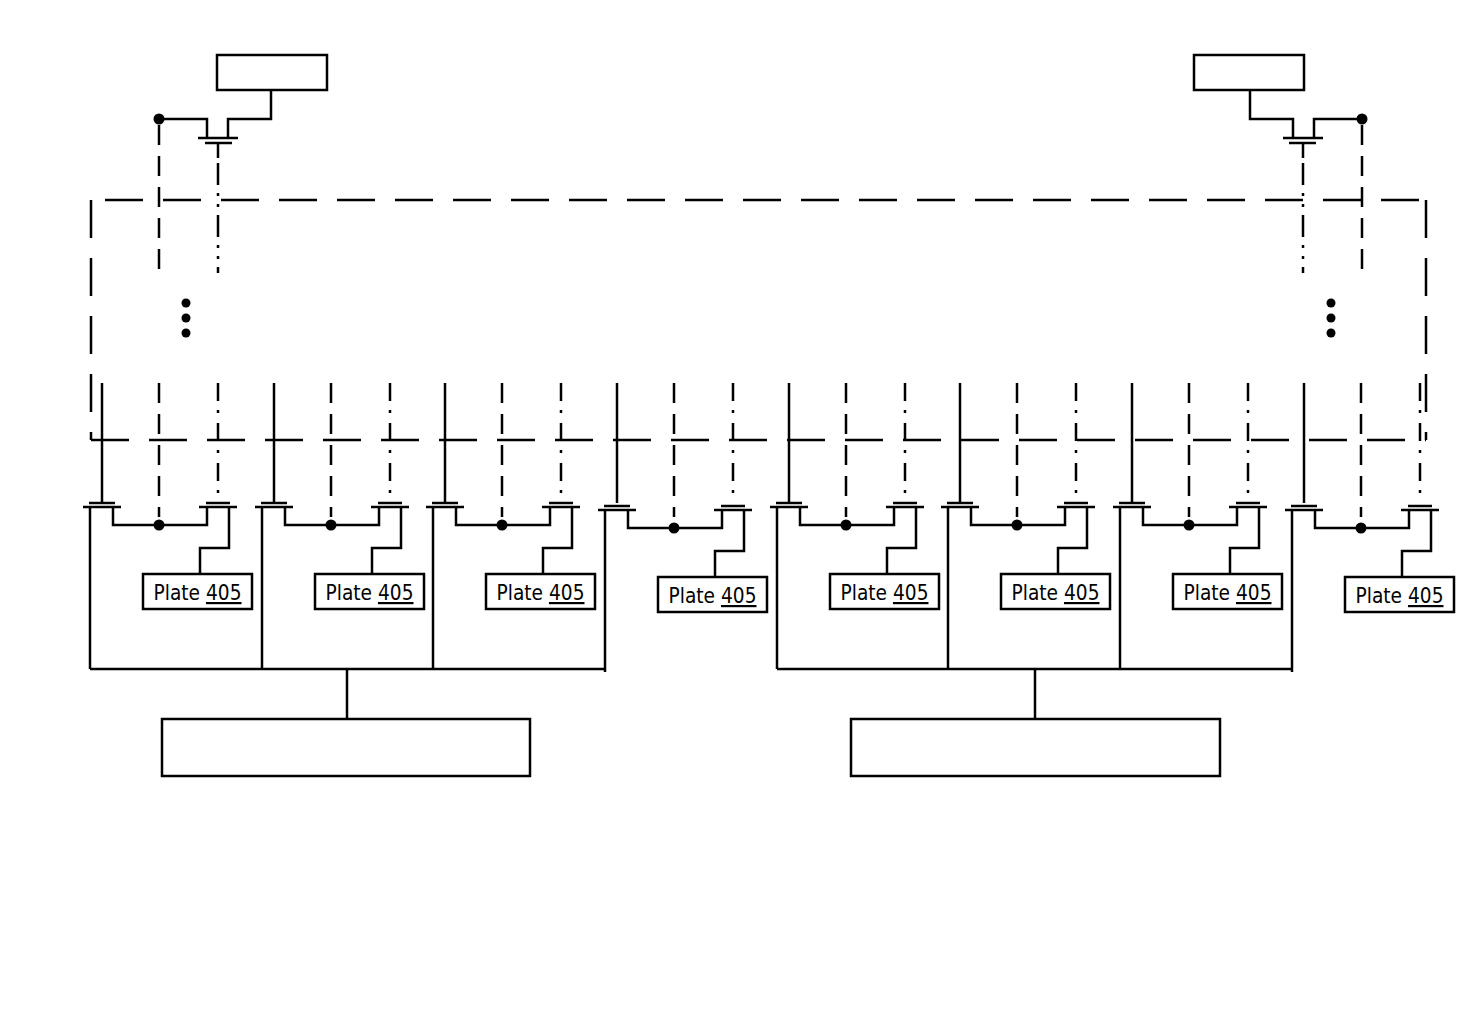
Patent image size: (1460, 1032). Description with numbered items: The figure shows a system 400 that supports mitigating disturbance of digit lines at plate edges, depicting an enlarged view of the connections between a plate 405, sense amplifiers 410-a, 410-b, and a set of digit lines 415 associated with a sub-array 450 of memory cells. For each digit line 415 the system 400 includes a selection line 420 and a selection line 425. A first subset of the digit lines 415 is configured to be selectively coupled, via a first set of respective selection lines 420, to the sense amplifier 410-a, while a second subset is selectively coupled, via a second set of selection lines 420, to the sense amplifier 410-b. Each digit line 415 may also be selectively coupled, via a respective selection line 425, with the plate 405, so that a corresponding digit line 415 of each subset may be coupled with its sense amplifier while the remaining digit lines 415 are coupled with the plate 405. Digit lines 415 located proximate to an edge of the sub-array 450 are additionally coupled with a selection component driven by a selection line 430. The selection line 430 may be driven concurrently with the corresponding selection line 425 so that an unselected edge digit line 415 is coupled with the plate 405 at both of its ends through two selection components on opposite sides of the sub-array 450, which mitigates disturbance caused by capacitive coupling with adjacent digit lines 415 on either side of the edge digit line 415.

The system 400 is at (895, 856).
The plate 405 is at (768, 363).
The sense amplifier 410-a is at (347, 722).
The sense amplifier 410-b is at (1034, 722).
The digit line 415 is at (133, 813).
The selection line 420 is at (418, 813).
The selection line 425 is at (700, 813).
The selection line 430 is at (1020, 813).
The sub-array 450 is at (866, 200).